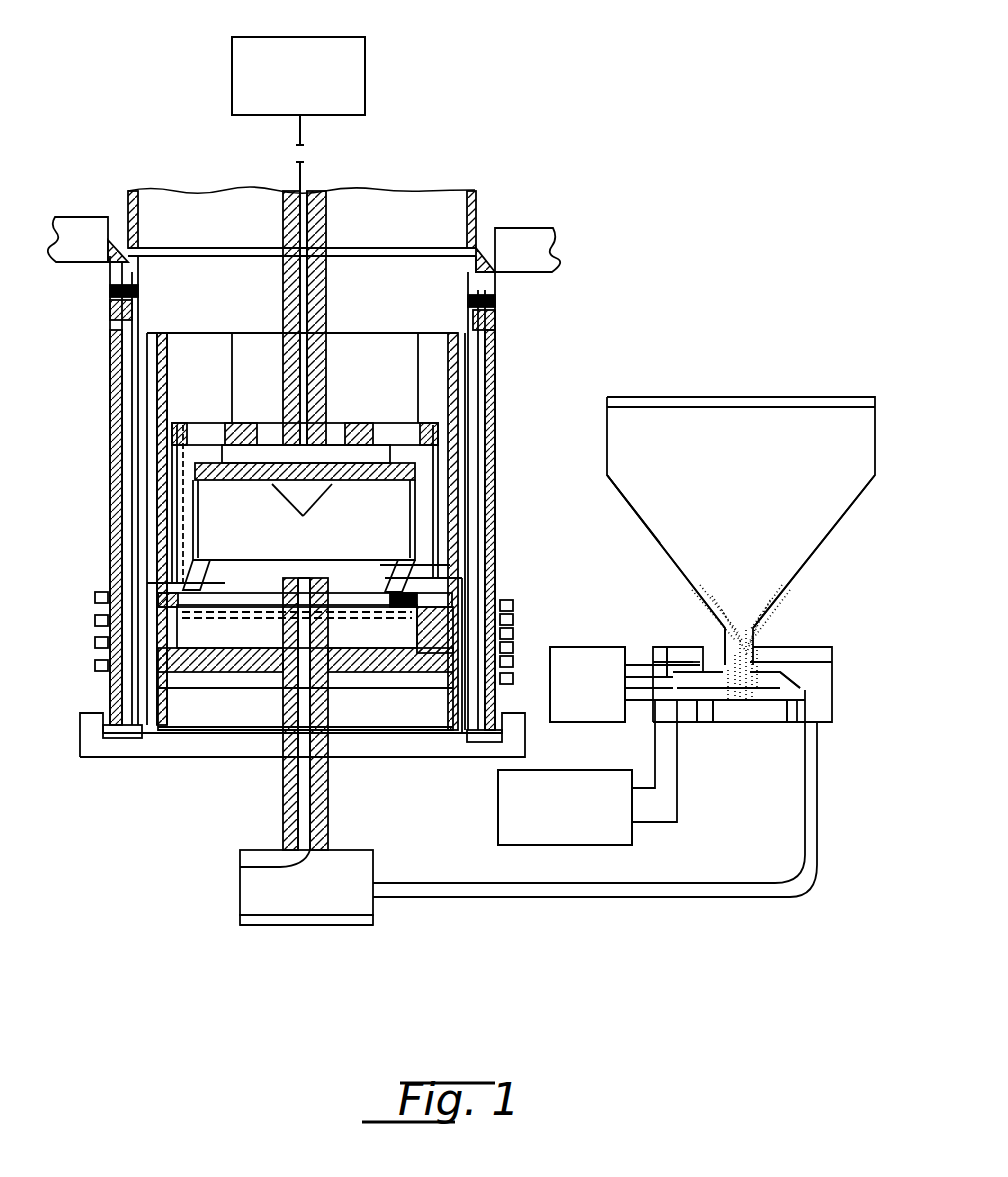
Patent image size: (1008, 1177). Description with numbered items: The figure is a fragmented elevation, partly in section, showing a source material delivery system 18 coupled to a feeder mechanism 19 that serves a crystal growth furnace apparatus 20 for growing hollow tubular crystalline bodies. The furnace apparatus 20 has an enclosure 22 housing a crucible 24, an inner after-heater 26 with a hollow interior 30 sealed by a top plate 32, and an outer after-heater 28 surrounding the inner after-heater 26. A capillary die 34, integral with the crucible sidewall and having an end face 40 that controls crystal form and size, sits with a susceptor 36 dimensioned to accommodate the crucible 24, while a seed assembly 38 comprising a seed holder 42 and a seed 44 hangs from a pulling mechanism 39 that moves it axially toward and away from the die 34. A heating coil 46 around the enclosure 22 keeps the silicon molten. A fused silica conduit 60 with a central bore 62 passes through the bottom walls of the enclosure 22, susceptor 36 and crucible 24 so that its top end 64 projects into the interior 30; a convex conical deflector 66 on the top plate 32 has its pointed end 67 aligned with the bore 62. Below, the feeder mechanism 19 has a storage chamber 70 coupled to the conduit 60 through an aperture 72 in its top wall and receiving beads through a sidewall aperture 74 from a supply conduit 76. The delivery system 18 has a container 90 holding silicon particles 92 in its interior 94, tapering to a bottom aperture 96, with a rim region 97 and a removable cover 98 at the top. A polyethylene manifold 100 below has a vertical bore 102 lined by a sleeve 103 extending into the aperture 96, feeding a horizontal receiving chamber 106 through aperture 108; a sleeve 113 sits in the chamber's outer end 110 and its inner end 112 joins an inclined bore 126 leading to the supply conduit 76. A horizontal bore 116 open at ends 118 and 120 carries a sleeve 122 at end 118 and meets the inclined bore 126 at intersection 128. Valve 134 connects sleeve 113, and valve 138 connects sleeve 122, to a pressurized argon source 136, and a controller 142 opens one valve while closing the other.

The delivery system 18 is at (742, 352).
The feeder mechanism 19 is at (280, 928).
The furnace apparatus 20 is at (100, 330).
The furnace enclosure 22 is at (103, 718).
The crucible 24 is at (158, 662).
The inner after-heater 26 is at (195, 490).
The outer after-heater 28 is at (160, 520).
The hollow interior 30 is at (405, 512).
The top plate 32 is at (386, 481).
The capillary die 34 is at (160, 600).
The susceptor 36 is at (177, 620).
The seed assembly 38 is at (185, 430).
The pulling mechanism 39 is at (365, 38).
The end face 40 is at (450, 576).
The seed holder 42 is at (245, 418).
The seed 44 is at (222, 450).
The heating coil 46 is at (513, 666).
The conduit 60 is at (328, 781).
The central bore 62 is at (305, 773).
The top end 64 is at (320, 580).
The convex conical deflector 66 is at (285, 490).
The pointed end 67 is at (302, 517).
The storage chamber 70 is at (240, 889).
The aperture 72 is at (240, 867).
The aperture 74 is at (378, 897).
The supply conduit 76 is at (580, 898).
The container 90 is at (607, 442).
The particles 92 is at (773, 603).
The interior 94 is at (650, 522).
The bottom aperture 96 is at (765, 615).
The hopper rim 97 is at (610, 404).
The removable cover 98 is at (806, 400).
The manifold 100 is at (845, 645).
The hollow bore 102 is at (722, 620).
The hollow sleeve 103 is at (770, 660).
The receiving chamber 106 is at (695, 660).
The aperture 108 is at (800, 663).
The outer end 110 is at (695, 662).
The inner end 112 is at (770, 666).
The sleeve 113 is at (700, 672).
The horizontally-extending bore 116 is at (733, 702).
The end 118 is at (713, 722).
The end 120 is at (787, 722).
The hollow sleeve 122 is at (685, 706).
The inclined bore 126 is at (810, 695).
The intersection 128 is at (800, 679).
The valve 134 is at (680, 665).
The source 136 is at (577, 722).
The valve 138 is at (685, 700).
The controller 142 is at (571, 770).